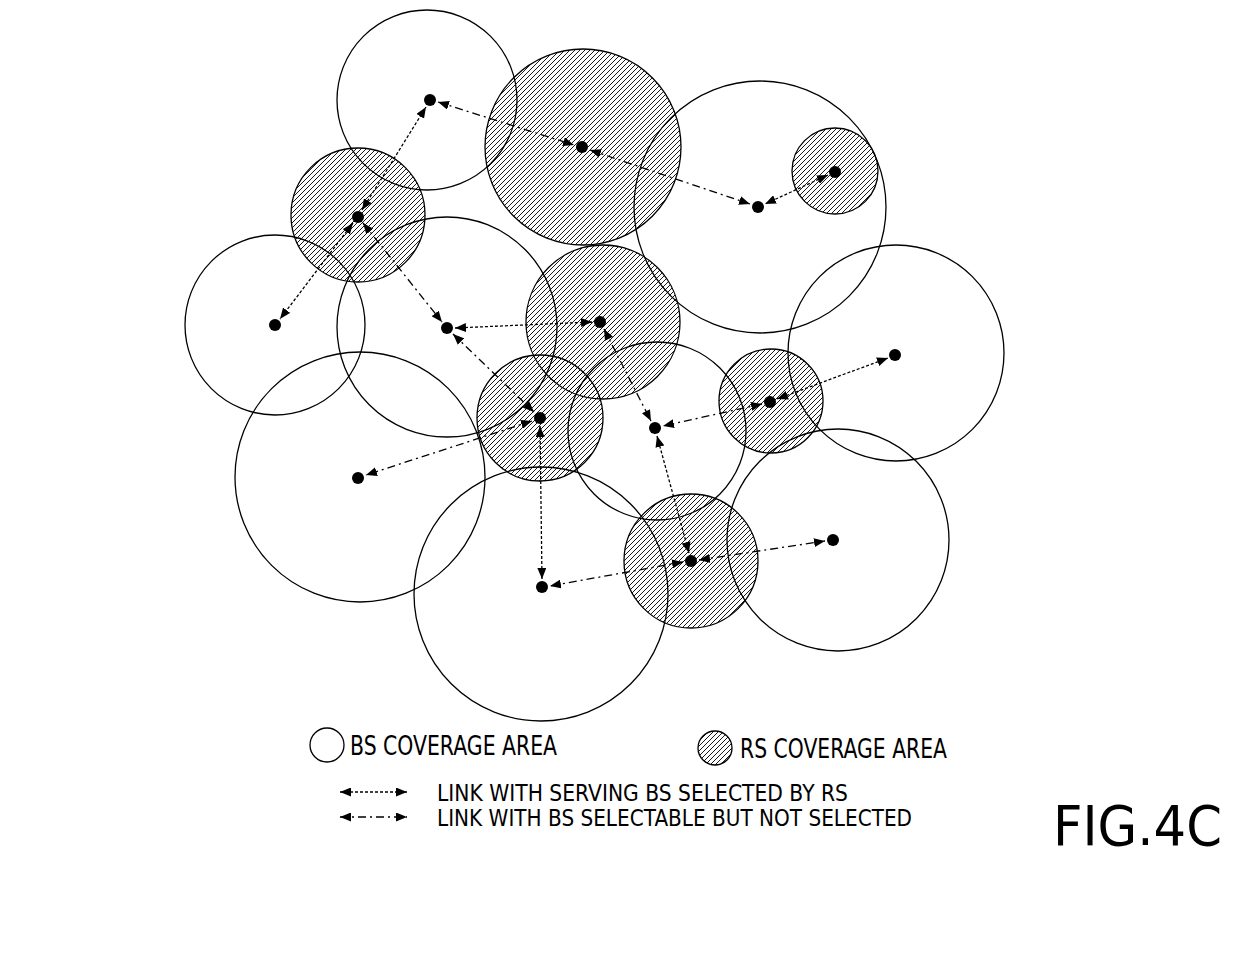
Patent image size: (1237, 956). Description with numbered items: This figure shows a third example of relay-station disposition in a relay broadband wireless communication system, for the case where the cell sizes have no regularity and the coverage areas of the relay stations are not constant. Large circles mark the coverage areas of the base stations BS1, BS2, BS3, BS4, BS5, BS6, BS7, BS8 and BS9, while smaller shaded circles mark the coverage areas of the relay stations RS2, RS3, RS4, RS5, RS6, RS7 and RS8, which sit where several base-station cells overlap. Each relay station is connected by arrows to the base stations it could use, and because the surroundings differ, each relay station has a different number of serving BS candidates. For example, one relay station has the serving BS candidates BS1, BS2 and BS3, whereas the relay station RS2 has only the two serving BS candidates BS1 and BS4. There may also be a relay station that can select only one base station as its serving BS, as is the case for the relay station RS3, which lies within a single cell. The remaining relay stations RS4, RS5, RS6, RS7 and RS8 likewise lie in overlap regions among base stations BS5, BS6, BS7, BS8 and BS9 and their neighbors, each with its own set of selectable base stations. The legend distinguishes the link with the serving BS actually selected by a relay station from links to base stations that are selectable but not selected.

The base station BS1 is at (427, 100).
The base station BS2 is at (275, 325).
The base station BS3 is at (447, 327).
The base station BS4 is at (760, 207).
The base station 5 BS5 is at (360, 477).
The base station 6 BS6 is at (657, 431).
The base station 7 BS7 is at (896, 353).
The base station 8 BS8 is at (541, 594).
The base station 9 BS9 is at (838, 540).
The relay station RS2 is at (583, 147).
The relay station RS3 is at (835, 171).
The relay station 4 RS4 is at (603, 322).
The relay station 5 RS5 is at (540, 418).
The relay station 6 RS6 is at (771, 401).
The relay station 7 RS7 is at (691, 561).
The relay station 8 RS8 is at (358, 215).